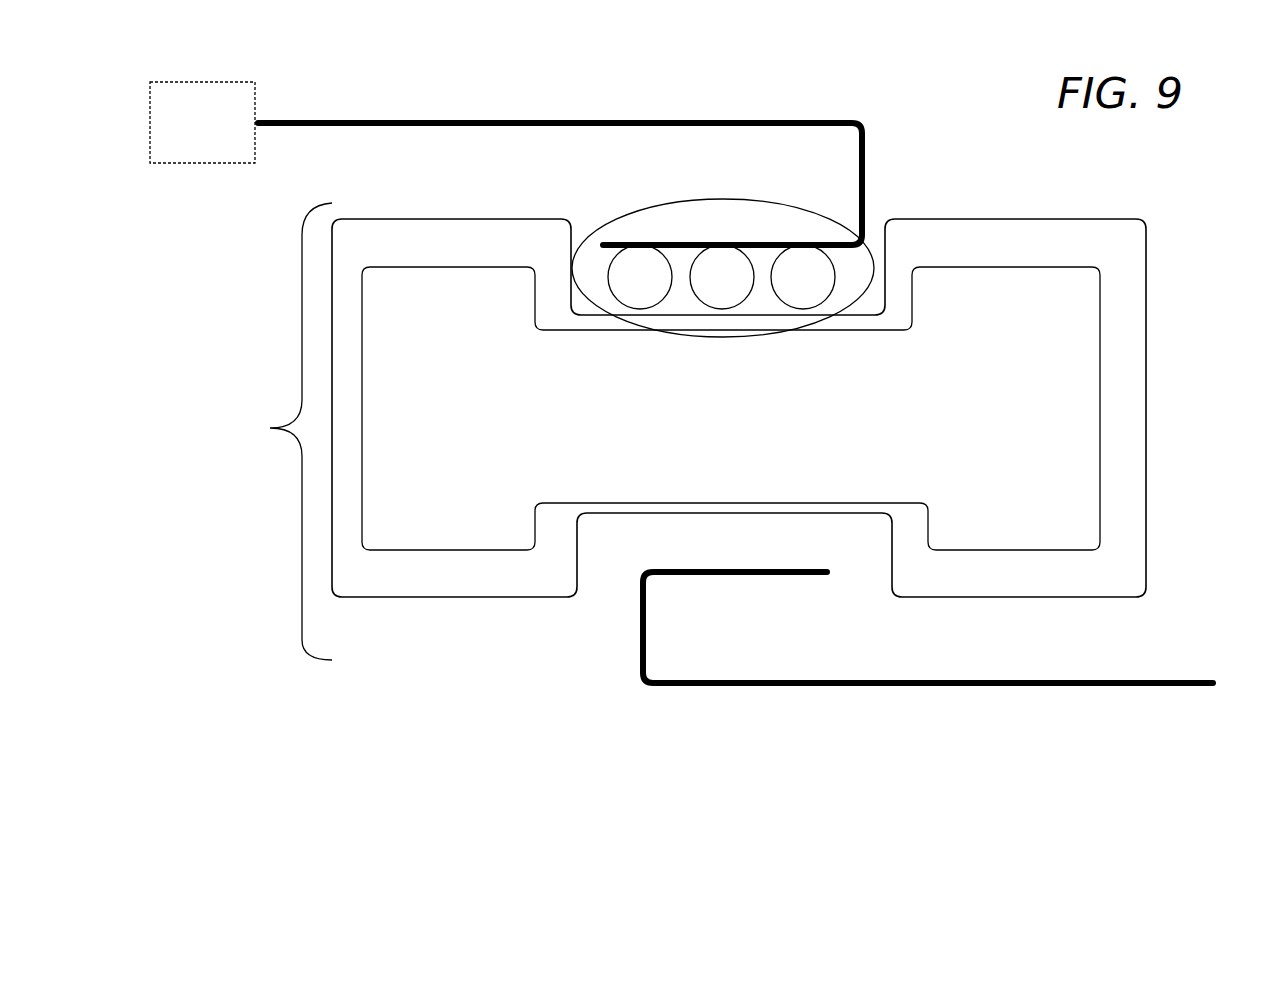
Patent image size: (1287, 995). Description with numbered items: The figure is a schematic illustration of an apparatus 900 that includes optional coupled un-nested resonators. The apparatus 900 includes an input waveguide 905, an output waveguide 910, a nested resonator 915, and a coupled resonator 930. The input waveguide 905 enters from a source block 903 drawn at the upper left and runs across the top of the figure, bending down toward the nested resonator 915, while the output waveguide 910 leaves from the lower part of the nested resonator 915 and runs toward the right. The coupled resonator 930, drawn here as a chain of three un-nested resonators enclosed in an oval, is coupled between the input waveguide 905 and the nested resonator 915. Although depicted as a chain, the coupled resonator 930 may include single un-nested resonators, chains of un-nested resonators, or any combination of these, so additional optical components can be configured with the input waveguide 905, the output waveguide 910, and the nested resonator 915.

The apparatus 900 is at (362, 692).
The RF module 903 is at (202, 122).
The input waveguide 905 is at (425, 103).
The output waveguide 910 is at (1020, 700).
The nested resonator 915 is at (267, 431).
The coupled resonator 930 is at (795, 205).